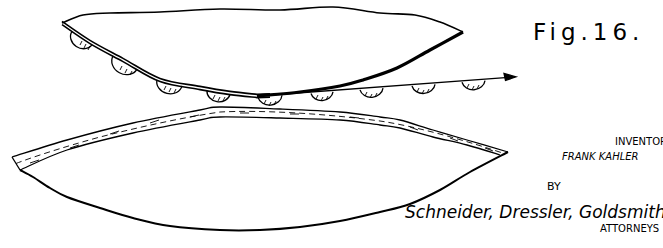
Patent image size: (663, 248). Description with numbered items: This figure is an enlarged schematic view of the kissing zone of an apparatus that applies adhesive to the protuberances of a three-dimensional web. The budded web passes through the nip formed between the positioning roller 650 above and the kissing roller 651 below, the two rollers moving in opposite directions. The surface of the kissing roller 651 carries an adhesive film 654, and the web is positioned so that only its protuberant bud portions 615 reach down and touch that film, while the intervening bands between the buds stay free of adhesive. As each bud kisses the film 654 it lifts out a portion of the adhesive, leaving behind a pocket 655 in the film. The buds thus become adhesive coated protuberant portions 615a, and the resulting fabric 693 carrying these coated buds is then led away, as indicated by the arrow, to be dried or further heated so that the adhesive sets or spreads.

The positioning roller 650 is at (277, 43).
The kissing roller 651 is at (282, 199).
The protuberant bud portions 615 is at (77, 48).
The adhesive coated protuberant portions 615a is at (413, 87).
The fabric 693 is at (450, 80).
The adhesive film 654 is at (60, 131).
The pockets 655 is at (475, 142).